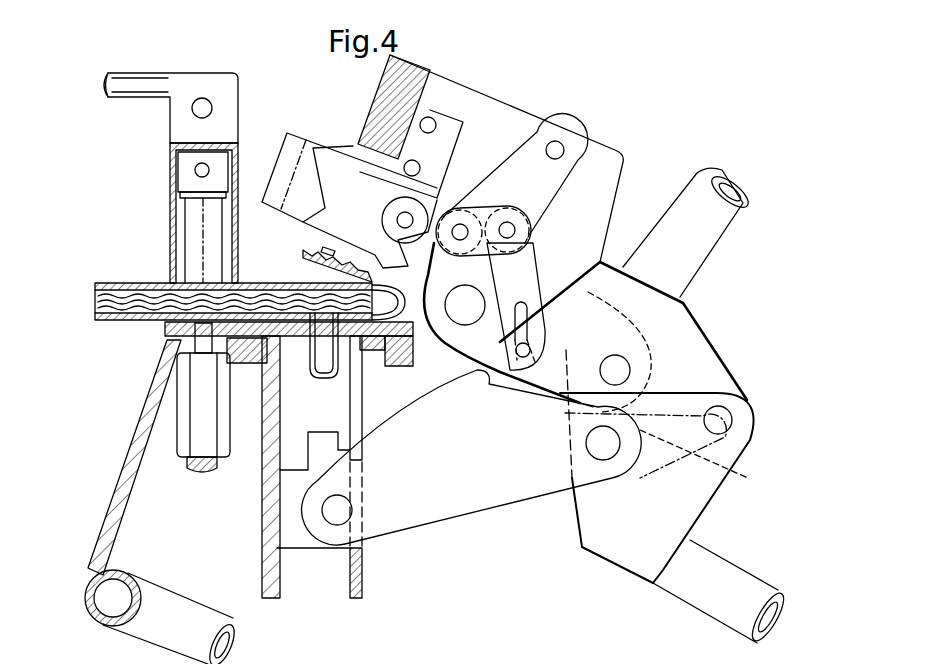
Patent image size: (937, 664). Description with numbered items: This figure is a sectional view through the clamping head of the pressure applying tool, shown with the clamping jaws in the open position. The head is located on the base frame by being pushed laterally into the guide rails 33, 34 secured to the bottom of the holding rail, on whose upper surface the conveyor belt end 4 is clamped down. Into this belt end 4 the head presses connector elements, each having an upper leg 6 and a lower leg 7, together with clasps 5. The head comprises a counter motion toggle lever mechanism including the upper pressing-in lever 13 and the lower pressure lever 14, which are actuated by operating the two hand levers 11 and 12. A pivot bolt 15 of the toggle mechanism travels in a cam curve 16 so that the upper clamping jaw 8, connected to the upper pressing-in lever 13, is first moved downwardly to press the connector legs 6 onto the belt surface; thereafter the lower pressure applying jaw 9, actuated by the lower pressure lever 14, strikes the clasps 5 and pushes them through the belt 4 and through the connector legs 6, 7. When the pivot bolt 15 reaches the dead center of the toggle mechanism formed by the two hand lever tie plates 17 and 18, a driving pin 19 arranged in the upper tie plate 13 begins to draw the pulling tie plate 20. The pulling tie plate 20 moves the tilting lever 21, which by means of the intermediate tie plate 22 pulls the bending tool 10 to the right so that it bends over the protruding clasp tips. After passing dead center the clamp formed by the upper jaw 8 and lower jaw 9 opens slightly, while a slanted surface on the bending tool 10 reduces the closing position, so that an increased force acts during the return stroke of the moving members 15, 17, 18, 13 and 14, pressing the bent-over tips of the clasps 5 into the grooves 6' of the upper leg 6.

The conveyor belt end 4 is at (115, 318).
The clasps 5 is at (337, 368).
The upper connector leg 6 is at (319, 259).
The grooves 6' is at (331, 252).
The lower connector leg 7 is at (318, 355).
The upper clamping jaw 8 is at (347, 225).
The lower pressure applying jaw 9 is at (313, 450).
The bending tool 10 is at (283, 167).
The hand lever 11 is at (712, 233).
The hand lever 12 is at (733, 577).
The upper pressing-in lever 13 is at (598, 153).
The lower pressure lever 14 is at (397, 523).
The pivot bolt 15 is at (728, 420).
The cam curve 16 is at (706, 418).
The hand lever tie plate 17 is at (695, 333).
The hand lever tie plate 18 is at (633, 567).
The driving pin 19 is at (530, 350).
The pulling tie plate 20 is at (528, 273).
The tilting lever 21 is at (543, 137).
The intermediate tie plate 22 is at (437, 208).
The guide rail 33 is at (385, 367).
The guide rail 34 is at (245, 366).